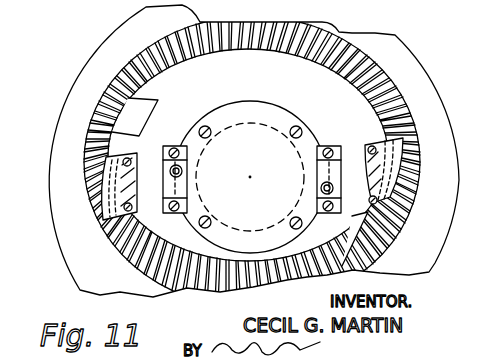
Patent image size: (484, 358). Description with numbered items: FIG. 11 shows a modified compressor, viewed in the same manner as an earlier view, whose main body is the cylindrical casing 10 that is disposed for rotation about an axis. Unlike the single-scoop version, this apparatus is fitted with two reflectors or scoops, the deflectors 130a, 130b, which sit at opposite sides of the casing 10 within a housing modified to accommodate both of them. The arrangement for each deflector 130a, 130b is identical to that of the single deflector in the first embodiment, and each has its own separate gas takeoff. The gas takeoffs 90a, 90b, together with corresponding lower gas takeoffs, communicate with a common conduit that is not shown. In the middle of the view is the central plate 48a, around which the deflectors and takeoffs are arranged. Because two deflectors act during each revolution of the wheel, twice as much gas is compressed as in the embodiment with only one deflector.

The cylindrical casing 10 is at (66, 80).
The hub plate 48a is at (276, 92).
The gas takeoff 90a is at (162, 200).
The gas takeoff 90b is at (344, 153).
The deflector 130a is at (104, 215).
The deflector 130b is at (388, 142).